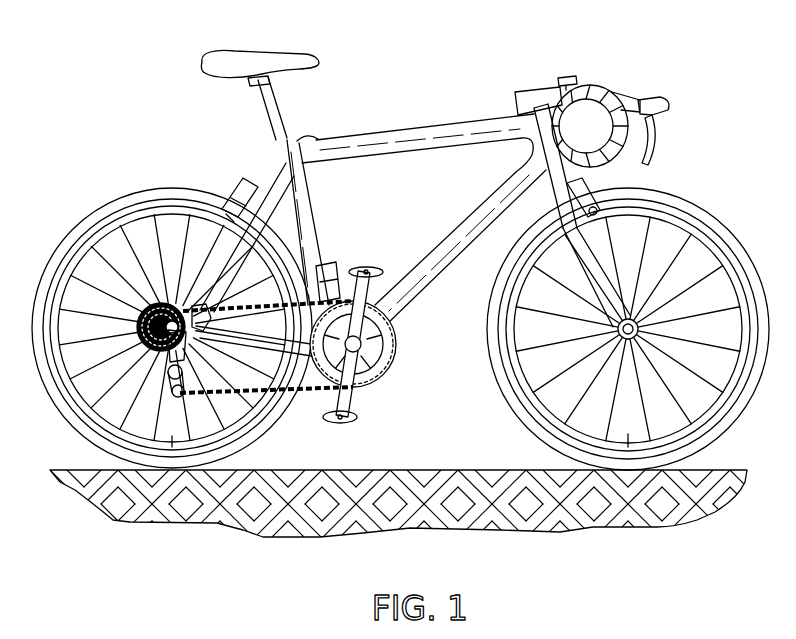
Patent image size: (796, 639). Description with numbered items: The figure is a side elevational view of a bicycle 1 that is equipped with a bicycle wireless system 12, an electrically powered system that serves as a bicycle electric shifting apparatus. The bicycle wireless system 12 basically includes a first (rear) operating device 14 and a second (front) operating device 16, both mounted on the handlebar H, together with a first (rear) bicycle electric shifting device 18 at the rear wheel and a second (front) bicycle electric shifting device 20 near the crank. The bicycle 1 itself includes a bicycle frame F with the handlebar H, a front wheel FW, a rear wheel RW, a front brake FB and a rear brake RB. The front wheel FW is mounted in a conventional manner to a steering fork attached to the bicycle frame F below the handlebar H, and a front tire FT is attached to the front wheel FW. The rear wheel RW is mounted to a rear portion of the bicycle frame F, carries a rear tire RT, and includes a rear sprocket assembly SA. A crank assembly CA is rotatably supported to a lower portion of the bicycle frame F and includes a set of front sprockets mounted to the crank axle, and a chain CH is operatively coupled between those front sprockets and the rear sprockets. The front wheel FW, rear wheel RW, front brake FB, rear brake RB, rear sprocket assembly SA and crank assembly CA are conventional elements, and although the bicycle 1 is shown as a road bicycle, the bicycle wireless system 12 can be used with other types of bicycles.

The bicycle 1 is at (660, 46).
The bicycle wireless system 12 is at (685, 129).
The first (rear) operating device 14 is at (662, 106).
The second (front) operating device 16 is at (653, 106).
The first (rear) bicycle electric shifting device 18 is at (166, 409).
The second (front) bicycle electric shifting device 20 is at (338, 268).
The bicycle frame F is at (397, 120).
The handlebar H is at (600, 92).
The rear brake RB is at (232, 190).
The front brake FB is at (582, 184).
The rear wheel RW is at (42, 382).
The front wheel FW is at (497, 382).
The rear tire RT is at (93, 214).
The front tire FT is at (687, 206).
The rear sprocket assembly SA is at (173, 213).
The crank assembly CA is at (384, 344).
The chain CH is at (317, 393).